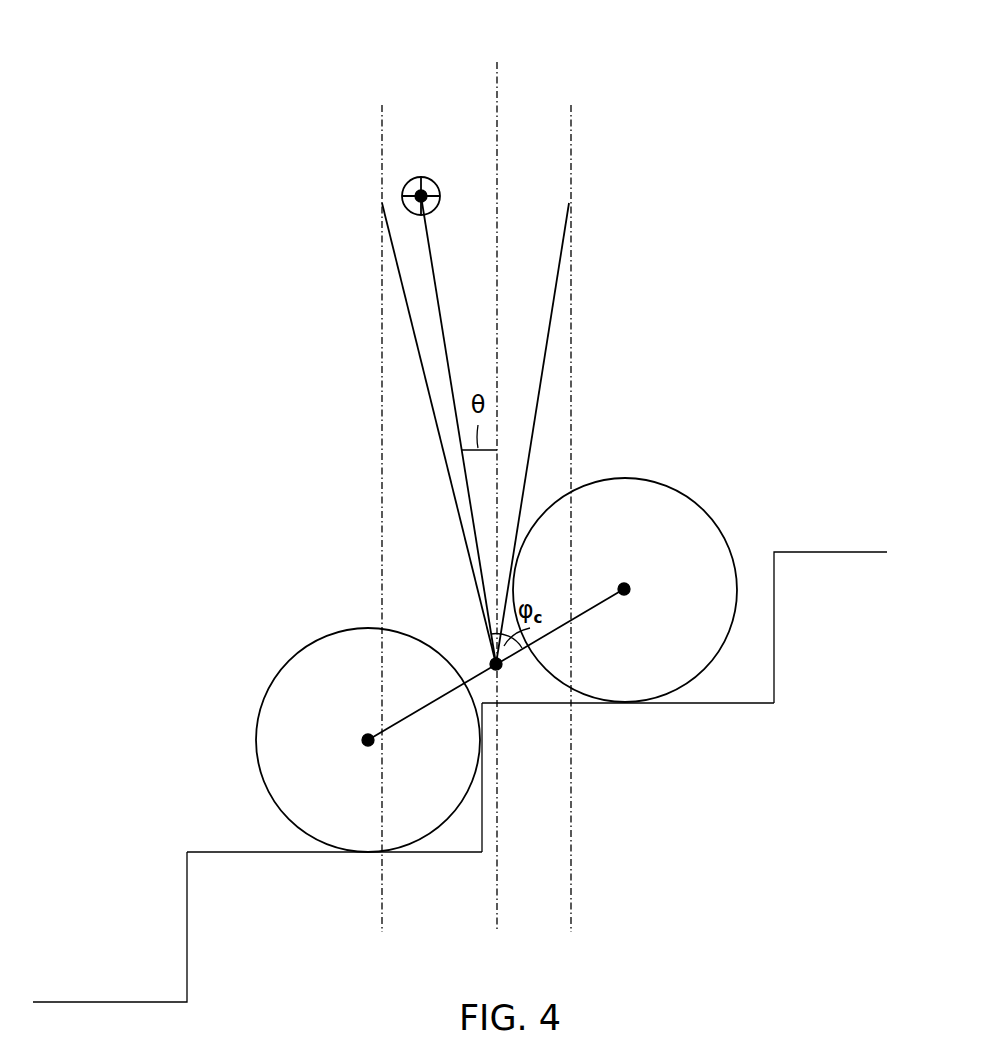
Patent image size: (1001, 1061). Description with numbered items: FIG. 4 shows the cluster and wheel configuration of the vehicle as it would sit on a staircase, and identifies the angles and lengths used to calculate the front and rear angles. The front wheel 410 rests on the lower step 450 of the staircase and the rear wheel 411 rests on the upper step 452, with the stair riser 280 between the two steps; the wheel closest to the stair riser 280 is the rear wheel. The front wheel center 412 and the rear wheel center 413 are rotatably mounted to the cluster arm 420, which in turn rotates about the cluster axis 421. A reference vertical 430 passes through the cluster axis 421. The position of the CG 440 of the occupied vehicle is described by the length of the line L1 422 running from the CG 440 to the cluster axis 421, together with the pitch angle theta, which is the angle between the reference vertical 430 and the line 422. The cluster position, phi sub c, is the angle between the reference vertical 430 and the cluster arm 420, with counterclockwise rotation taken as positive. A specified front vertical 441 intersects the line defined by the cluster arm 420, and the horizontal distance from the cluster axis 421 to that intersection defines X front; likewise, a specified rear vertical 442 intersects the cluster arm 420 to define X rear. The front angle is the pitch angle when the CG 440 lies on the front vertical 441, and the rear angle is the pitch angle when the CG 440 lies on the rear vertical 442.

The stair riser 280 is at (483, 818).
The front wheel 410 is at (296, 652).
The rear wheel 411 is at (705, 505).
The front wheel center 412 is at (362, 732).
The rear wheel center 413 is at (633, 583).
The cluster arm 420 is at (590, 614).
The cluster axis 421 is at (501, 670).
The line L1 from CG to cluster axis 422 is at (437, 272).
The reference vertical 430 is at (496, 72).
The CG of the occupied vehicle 440 is at (432, 179).
The front vertical 441 is at (380, 385).
The rear vertical 442 is at (573, 322).
The lower step 450 is at (231, 855).
The upper step 452 is at (750, 705).